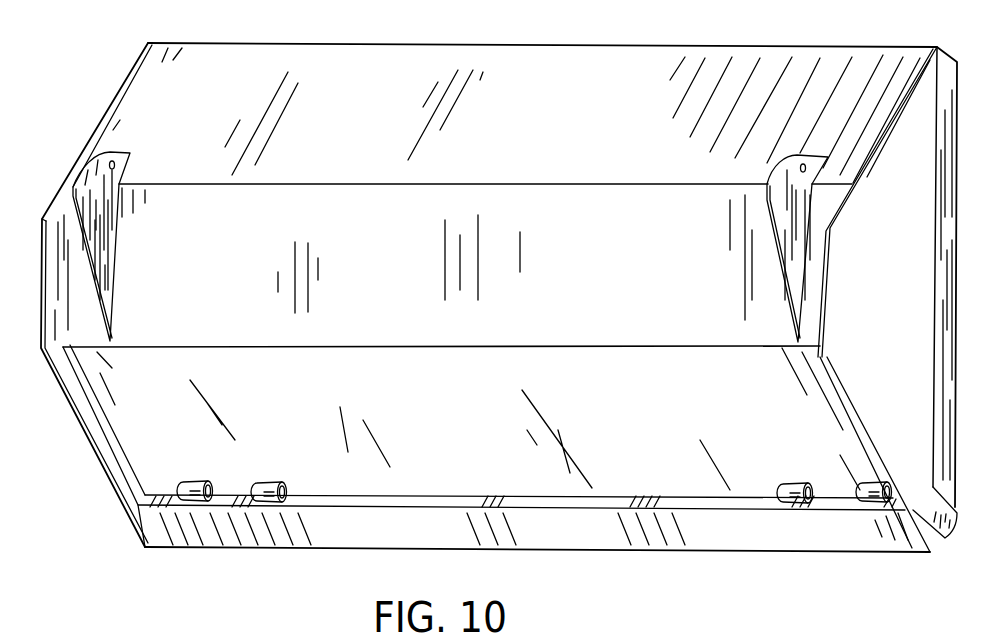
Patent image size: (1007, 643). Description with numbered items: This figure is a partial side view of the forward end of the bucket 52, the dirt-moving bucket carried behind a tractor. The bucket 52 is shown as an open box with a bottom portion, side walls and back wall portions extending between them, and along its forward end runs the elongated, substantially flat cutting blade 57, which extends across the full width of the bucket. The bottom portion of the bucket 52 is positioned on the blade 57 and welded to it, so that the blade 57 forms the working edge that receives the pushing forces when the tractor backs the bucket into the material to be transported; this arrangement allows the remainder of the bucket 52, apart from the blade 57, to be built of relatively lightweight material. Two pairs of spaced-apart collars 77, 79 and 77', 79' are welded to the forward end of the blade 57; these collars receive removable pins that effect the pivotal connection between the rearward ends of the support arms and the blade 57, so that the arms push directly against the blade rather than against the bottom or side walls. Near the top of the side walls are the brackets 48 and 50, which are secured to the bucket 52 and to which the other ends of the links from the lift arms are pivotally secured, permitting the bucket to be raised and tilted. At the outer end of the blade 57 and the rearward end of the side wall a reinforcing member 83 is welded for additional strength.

The bucket 52 is at (636, 31).
The bracket 50 is at (120, 165).
The bracket 48 is at (772, 173).
The cutting blade 57 is at (440, 532).
The collar 77 is at (176, 463).
The collar 79 is at (289, 464).
The collar 77' is at (784, 471).
The collar 79' is at (855, 471).
The reinforcing member 83 is at (942, 537).